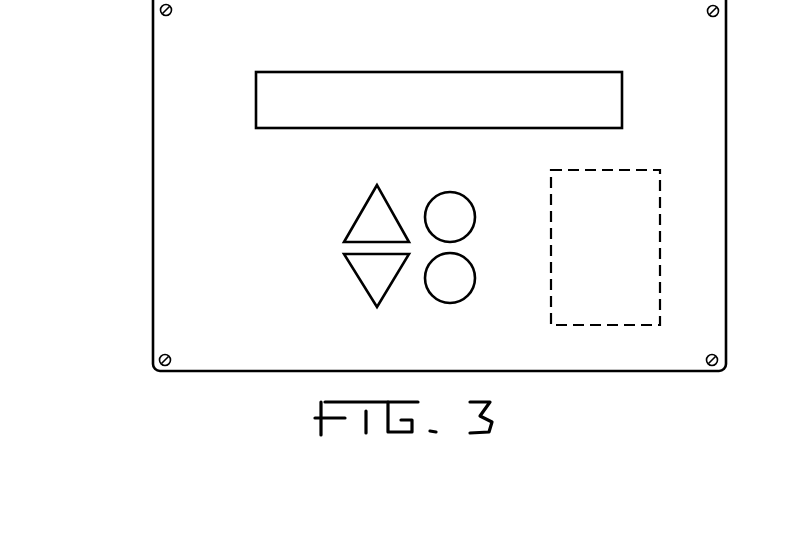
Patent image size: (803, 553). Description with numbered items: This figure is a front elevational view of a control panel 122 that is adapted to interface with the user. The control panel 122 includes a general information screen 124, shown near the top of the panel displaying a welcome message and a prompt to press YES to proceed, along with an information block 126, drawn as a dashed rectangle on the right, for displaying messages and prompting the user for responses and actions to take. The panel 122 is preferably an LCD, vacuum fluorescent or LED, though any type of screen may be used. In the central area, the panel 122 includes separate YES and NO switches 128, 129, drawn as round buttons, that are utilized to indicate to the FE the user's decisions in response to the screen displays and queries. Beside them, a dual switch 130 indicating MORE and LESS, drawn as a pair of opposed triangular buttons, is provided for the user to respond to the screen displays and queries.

The control panel 122 is at (126, 101).
The general information screen 124 is at (272, 88).
The information block 126 is at (630, 268).
The YES switch 128 is at (465, 193).
The NO switch 129 is at (474, 270).
The dual switch 130 is at (346, 263).